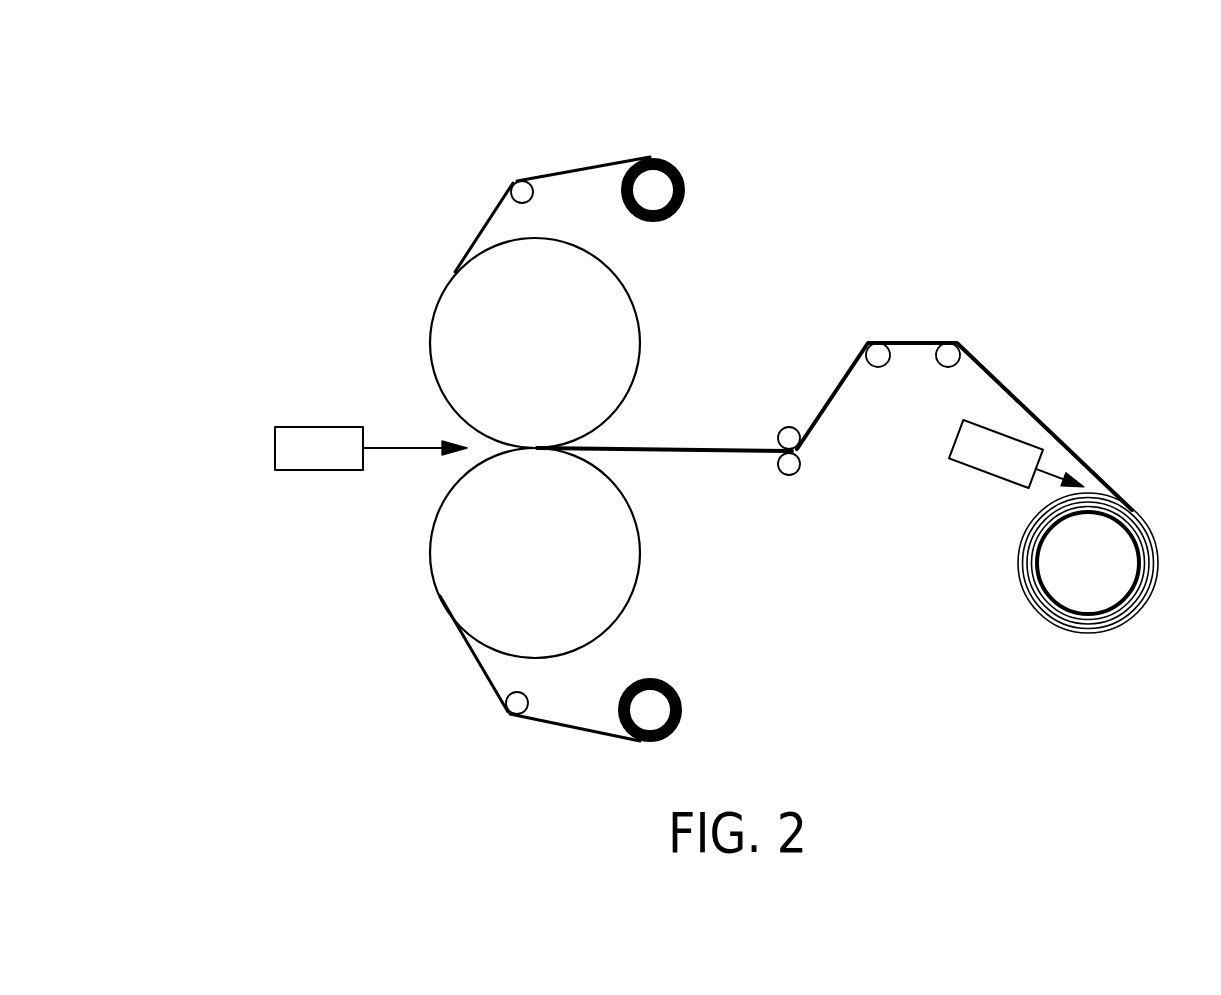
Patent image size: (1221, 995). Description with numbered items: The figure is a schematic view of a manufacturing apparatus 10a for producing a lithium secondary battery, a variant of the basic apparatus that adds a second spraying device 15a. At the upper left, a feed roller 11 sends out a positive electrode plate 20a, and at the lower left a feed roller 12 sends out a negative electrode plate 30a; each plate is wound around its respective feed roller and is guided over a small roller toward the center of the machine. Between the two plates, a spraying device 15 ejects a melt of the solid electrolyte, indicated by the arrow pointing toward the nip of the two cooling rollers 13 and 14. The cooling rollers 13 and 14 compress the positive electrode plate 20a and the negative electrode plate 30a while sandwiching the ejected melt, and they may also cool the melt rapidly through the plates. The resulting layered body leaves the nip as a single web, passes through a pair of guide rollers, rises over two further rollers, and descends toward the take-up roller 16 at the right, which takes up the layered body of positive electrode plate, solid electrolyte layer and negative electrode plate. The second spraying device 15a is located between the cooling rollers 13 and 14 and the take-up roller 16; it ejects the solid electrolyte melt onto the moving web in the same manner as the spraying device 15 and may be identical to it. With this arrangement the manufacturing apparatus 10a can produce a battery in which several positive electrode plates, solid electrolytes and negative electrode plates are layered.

The manufacturing apparatus 10a is at (276, 146).
The feed roller 11 is at (686, 171).
The feed roller 12 is at (682, 689).
The cooling roller 13 is at (641, 343).
The cooling roller 14 is at (641, 557).
The spraying device 15 is at (318, 427).
The second spraying device 15a is at (973, 472).
The take-up roller 16 is at (1148, 511).
The positive electrode plate 20a is at (473, 236).
The negative electrode plate 30a is at (468, 657).